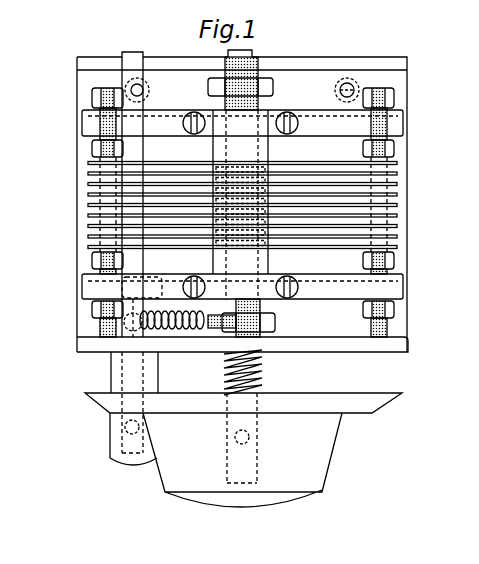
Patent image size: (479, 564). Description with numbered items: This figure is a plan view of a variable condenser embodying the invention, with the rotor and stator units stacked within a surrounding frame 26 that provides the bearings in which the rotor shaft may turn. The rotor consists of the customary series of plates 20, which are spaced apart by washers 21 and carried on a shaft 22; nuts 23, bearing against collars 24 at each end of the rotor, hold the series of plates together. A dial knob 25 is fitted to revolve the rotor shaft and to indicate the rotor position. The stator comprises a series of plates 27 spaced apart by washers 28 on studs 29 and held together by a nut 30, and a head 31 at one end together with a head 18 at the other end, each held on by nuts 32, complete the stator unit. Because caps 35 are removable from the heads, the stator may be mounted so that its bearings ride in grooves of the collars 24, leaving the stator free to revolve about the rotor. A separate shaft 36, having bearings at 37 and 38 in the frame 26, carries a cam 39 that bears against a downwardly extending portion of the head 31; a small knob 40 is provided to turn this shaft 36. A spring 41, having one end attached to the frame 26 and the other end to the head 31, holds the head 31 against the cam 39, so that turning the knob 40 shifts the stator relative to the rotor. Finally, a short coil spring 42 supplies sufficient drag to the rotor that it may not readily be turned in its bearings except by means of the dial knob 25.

The head 18 is at (82, 126).
The plates 20 is at (373, 219).
The washers 21 is at (250, 237).
The shaft 22 is at (268, 149).
The nuts 23 is at (273, 86).
The collars 24 is at (213, 149).
The dial knob 25 is at (332, 452).
The frame 26 is at (409, 345).
The plates 27 is at (88, 183).
The washers 28 is at (88, 204).
The studs 29 is at (108, 231).
The nut 30 is at (92, 259).
The head 31 is at (82, 291).
The nuts 32 is at (394, 96).
The caps 35 is at (295, 278).
The shaft 36 is at (123, 370).
The bearing 37 is at (140, 343).
The bearing 38 is at (122, 62).
The cam 39 is at (110, 332).
The small knob 40 is at (107, 433).
The spring 41 is at (177, 330).
The short coil spring 42 is at (259, 371).